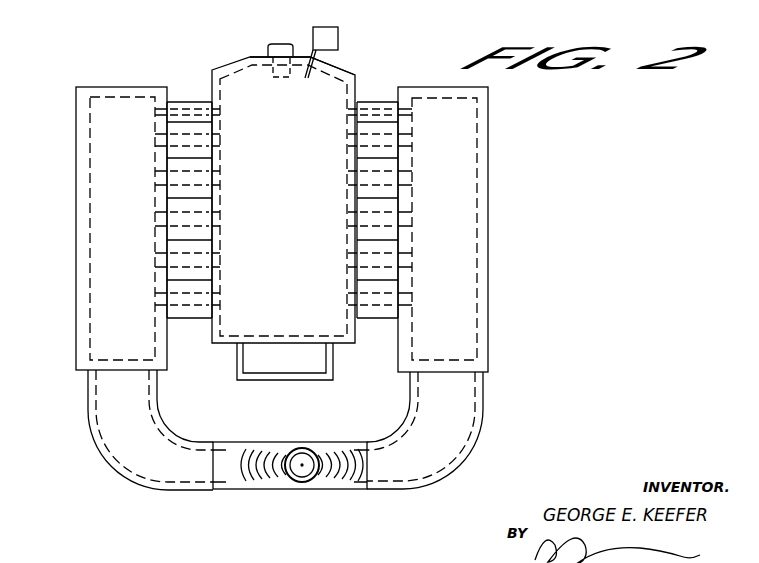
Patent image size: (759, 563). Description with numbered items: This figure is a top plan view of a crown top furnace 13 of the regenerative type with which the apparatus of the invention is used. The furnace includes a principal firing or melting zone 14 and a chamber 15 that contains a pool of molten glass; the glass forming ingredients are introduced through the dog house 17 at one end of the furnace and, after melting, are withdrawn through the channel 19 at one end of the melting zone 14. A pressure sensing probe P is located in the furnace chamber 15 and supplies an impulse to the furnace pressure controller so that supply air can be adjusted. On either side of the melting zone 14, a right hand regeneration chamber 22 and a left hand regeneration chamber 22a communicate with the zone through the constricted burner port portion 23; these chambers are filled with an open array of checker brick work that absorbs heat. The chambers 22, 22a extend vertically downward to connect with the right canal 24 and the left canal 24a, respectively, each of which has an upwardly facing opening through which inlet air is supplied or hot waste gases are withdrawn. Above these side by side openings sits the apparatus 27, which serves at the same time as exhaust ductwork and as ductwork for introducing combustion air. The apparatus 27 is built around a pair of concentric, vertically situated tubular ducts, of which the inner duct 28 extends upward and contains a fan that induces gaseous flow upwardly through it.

The crown top furnace 13 is at (503, 277).
The principal firing zone 14 is at (292, 191).
The chamber 15 is at (347, 71).
The dog house 17 is at (268, 365).
The channel 19 is at (270, 48).
The pressure sensing probe P is at (340, 35).
The right hand regeneration chamber 22 is at (468, 236).
The left hand regeneration chamber 22a is at (95, 160).
The constricted burner port portion 23 is at (186, 102).
The right canal 24 is at (457, 436).
The left canal 24a is at (135, 458).
The apparatus 27 is at (301, 491).
The inner duct 28 is at (300, 447).